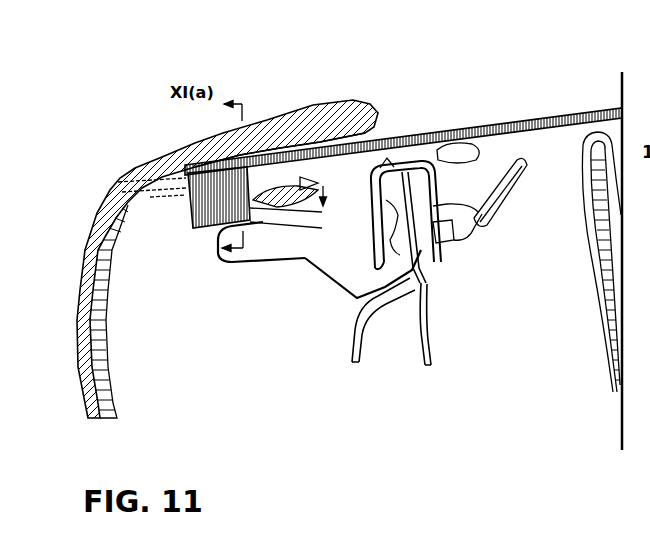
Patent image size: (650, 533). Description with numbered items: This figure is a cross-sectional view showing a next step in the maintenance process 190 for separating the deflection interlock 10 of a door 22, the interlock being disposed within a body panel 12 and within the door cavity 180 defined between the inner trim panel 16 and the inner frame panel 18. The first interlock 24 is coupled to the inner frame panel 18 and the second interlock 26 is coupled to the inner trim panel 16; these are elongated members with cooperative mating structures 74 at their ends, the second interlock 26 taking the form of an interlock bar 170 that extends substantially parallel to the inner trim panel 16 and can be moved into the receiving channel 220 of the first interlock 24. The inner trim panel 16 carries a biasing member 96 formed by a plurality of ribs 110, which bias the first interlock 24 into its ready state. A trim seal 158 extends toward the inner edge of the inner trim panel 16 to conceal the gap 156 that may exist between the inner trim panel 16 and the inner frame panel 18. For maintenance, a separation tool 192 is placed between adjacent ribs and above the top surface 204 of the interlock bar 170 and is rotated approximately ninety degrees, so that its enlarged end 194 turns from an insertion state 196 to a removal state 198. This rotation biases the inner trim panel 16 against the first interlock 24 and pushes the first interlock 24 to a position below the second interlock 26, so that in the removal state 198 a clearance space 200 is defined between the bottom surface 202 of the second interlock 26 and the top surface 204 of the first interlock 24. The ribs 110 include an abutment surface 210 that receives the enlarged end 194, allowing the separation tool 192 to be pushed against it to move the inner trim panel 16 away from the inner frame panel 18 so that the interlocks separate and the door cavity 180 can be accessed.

The deflection interlock 10 is at (316, 358).
The body panel 12 is at (575, 312).
The inner trim panel 16 is at (73, 315).
The inner frame panel 18 is at (432, 318).
The door 22 is at (143, 88).
The first interlock 24 is at (350, 284).
The second interlock 26 is at (268, 130).
The cooperative mating structures 74 is at (198, 280).
The biasing member 96 is at (100, 240).
The plurality of ribs 110 is at (148, 190).
The gap 156 is at (383, 135).
The trim seal 158 is at (487, 145).
The interlock bar 170 is at (270, 180).
The door cavity 180 is at (148, 315).
The maintenance process 190 is at (290, 97).
The separation tool 192 is at (541, 118).
The enlarged end 194 is at (167, 160).
The insertion state 196 is at (428, 128).
The removal state 198 is at (190, 218).
The clearance space 200 is at (313, 237).
The bottom surface 202 is at (268, 190).
The top surface 204 is at (160, 173).
The abutment surface 210 is at (143, 215).
The receiving channel 220 is at (258, 247).